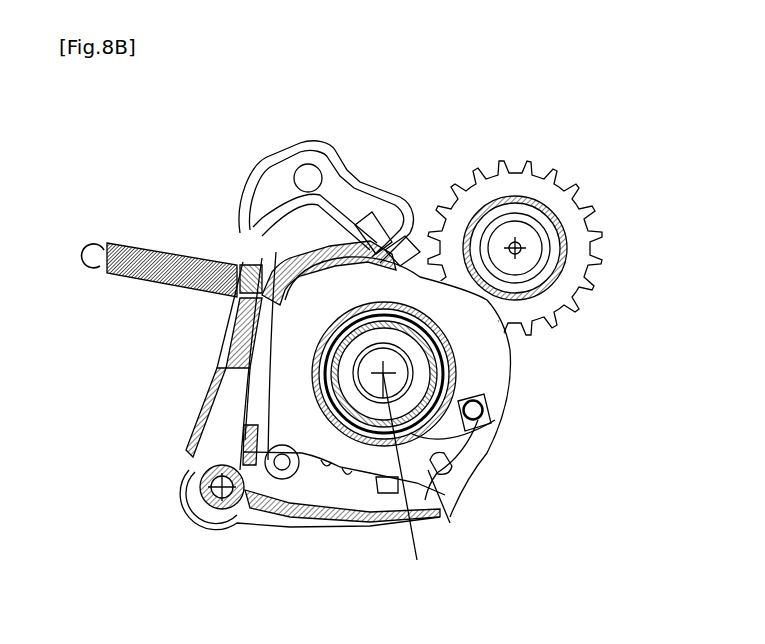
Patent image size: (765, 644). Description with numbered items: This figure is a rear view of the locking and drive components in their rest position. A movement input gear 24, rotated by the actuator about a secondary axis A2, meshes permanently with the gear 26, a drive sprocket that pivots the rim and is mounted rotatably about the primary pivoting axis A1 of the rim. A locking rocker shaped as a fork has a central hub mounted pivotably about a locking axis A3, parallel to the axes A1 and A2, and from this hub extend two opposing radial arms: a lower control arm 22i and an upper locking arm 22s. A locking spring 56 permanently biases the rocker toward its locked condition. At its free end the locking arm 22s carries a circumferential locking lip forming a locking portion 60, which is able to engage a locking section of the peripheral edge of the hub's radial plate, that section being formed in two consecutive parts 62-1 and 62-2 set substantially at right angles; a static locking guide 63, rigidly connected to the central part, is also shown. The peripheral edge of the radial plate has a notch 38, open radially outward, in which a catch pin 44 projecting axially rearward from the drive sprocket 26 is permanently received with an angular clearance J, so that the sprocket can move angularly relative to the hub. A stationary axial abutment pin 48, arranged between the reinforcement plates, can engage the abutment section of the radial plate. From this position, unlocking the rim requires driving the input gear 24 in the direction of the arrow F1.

The movement input gear 24 is at (521, 168).
The gear 26 is at (374, 489).
The notch 38 is at (507, 418).
The catch pin 44 is at (487, 400).
The stationary axial abutment pin 48 is at (256, 443).
The locking spring 56 is at (155, 243).
The locking portion 60 is at (361, 226).
The first part of locking section 62-1 is at (386, 256).
The second part of locking section 62-2 is at (320, 264).
The locking guide 63 is at (338, 160).
The upper arm (locking arm) 22s is at (223, 357).
The lower arm (control arm) 22i is at (270, 533).
The primary pivoting axis A1 is at (383, 373).
The secondary axis A2 is at (517, 247).
The locking axis A3 is at (200, 513).
The arrow (drive direction) F1 is at (503, 190).
The angular clearance J is at (503, 458).